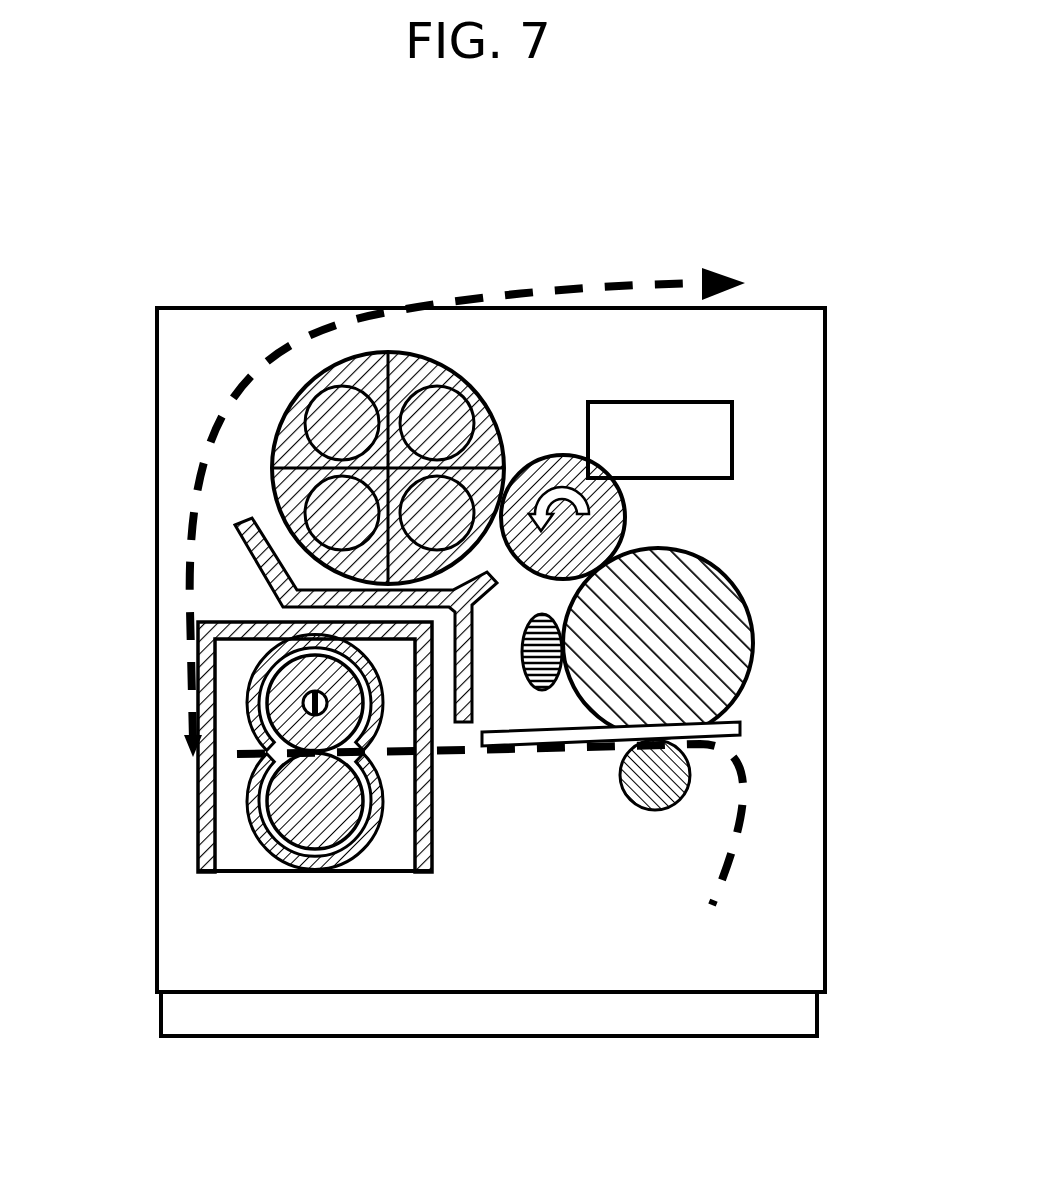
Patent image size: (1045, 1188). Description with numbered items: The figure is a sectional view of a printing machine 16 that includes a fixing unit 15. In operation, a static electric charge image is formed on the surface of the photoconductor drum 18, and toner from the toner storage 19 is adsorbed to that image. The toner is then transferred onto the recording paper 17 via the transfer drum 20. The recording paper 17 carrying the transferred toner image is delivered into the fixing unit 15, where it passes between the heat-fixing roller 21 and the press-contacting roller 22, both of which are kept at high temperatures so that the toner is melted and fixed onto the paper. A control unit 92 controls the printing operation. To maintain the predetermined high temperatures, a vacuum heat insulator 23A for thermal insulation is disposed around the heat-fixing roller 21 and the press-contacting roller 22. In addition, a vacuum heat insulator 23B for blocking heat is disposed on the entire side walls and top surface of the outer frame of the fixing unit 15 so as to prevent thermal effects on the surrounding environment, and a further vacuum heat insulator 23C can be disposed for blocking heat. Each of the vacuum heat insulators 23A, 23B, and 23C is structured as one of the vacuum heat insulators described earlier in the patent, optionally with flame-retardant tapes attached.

The fixing unit 15 is at (487, 621).
The printing machine 16 is at (318, 282).
The recording paper 17 is at (740, 722).
The photoconductor drum 18 is at (620, 495).
The toner storage 19 is at (485, 392).
The transfer drum 20 is at (733, 586).
The heat-fixing roller 21 is at (285, 692).
The press-contacting roller 22 is at (300, 815).
The vacuum heat insulator 23A is at (247, 795).
The vacuum heat insulator 23B is at (215, 622).
The vacuum heat insulator 23C is at (262, 565).
The control unit 92 is at (713, 402).